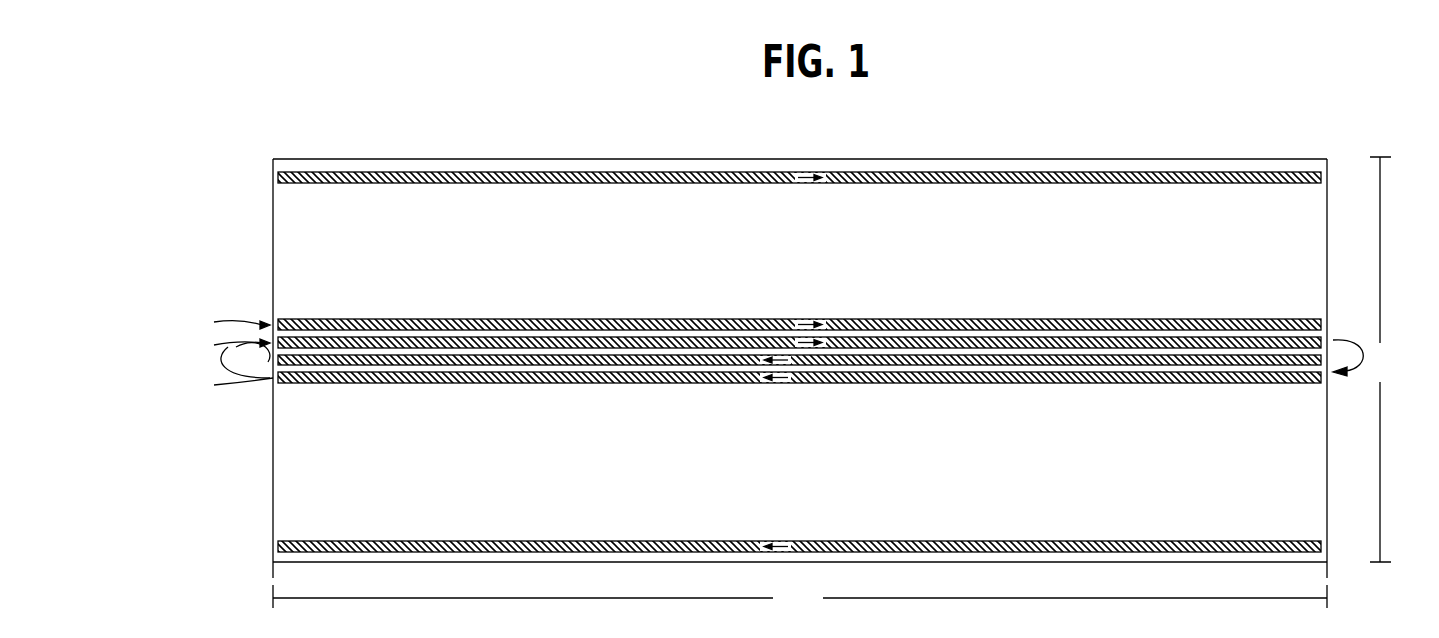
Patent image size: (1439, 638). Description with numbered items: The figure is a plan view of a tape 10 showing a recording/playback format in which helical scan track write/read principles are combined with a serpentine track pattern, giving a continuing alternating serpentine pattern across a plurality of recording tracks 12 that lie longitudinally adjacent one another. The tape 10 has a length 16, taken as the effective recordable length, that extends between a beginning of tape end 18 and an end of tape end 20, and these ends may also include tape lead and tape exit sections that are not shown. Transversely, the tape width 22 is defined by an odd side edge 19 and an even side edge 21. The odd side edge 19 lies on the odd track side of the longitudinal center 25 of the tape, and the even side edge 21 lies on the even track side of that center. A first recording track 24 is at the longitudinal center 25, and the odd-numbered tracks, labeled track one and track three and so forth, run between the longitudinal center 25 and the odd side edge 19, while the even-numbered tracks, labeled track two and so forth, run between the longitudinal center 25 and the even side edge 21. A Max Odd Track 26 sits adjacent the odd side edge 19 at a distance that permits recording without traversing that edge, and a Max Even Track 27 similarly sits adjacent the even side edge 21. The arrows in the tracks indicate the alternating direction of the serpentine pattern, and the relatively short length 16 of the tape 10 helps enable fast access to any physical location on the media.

The tape 10 is at (802, 355).
The recording tracks 12 is at (711, 345).
The length 16 is at (800, 599).
The beginning of tape (BOT) end 18 is at (1327, 159).
The odd side edge 19 is at (496, 158).
The end of tape (EOT) end 20 is at (273, 159).
The even side edge 21 is at (484, 566).
The tape width 22 is at (1383, 359).
The first recording track 24 is at (278, 380).
The longitudinal center 25 is at (1328, 357).
The Max Odd Track 26 is at (278, 178).
The Max Even Track 27 is at (278, 546).